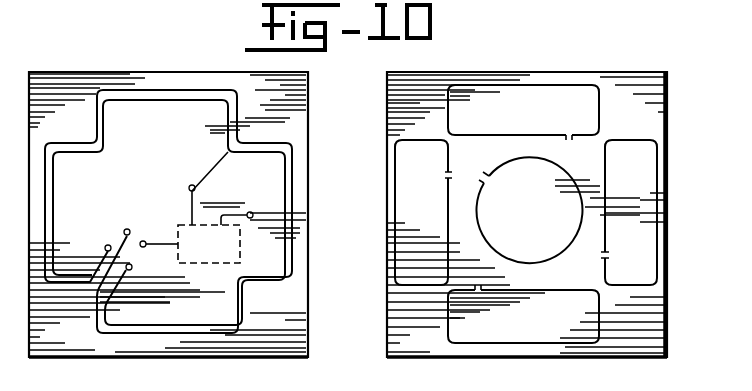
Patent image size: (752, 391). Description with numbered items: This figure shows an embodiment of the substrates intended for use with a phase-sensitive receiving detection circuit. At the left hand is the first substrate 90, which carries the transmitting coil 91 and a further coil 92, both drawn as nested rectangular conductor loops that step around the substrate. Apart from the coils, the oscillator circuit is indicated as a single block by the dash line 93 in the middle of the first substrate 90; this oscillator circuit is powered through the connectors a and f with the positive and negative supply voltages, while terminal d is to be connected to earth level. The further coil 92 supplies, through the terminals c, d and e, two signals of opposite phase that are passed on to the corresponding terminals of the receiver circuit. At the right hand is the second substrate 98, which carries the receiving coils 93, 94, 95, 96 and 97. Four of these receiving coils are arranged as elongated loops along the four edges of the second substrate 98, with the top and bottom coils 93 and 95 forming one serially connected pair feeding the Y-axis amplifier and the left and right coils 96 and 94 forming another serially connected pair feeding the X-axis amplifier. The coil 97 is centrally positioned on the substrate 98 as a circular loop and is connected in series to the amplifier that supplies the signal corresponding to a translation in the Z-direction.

The first substrate 90 is at (286, 320).
The transmitting coil 91 is at (308, 176).
The further coil 92 is at (286, 207).
The receiving coil 93 is at (240, 236).
The receiving coil 94 is at (657, 203).
The receiving coil 95 is at (520, 345).
The receiving coil 96 is at (395, 207).
The central receiving coil 97 is at (474, 215).
The second substrate 98 is at (639, 335).